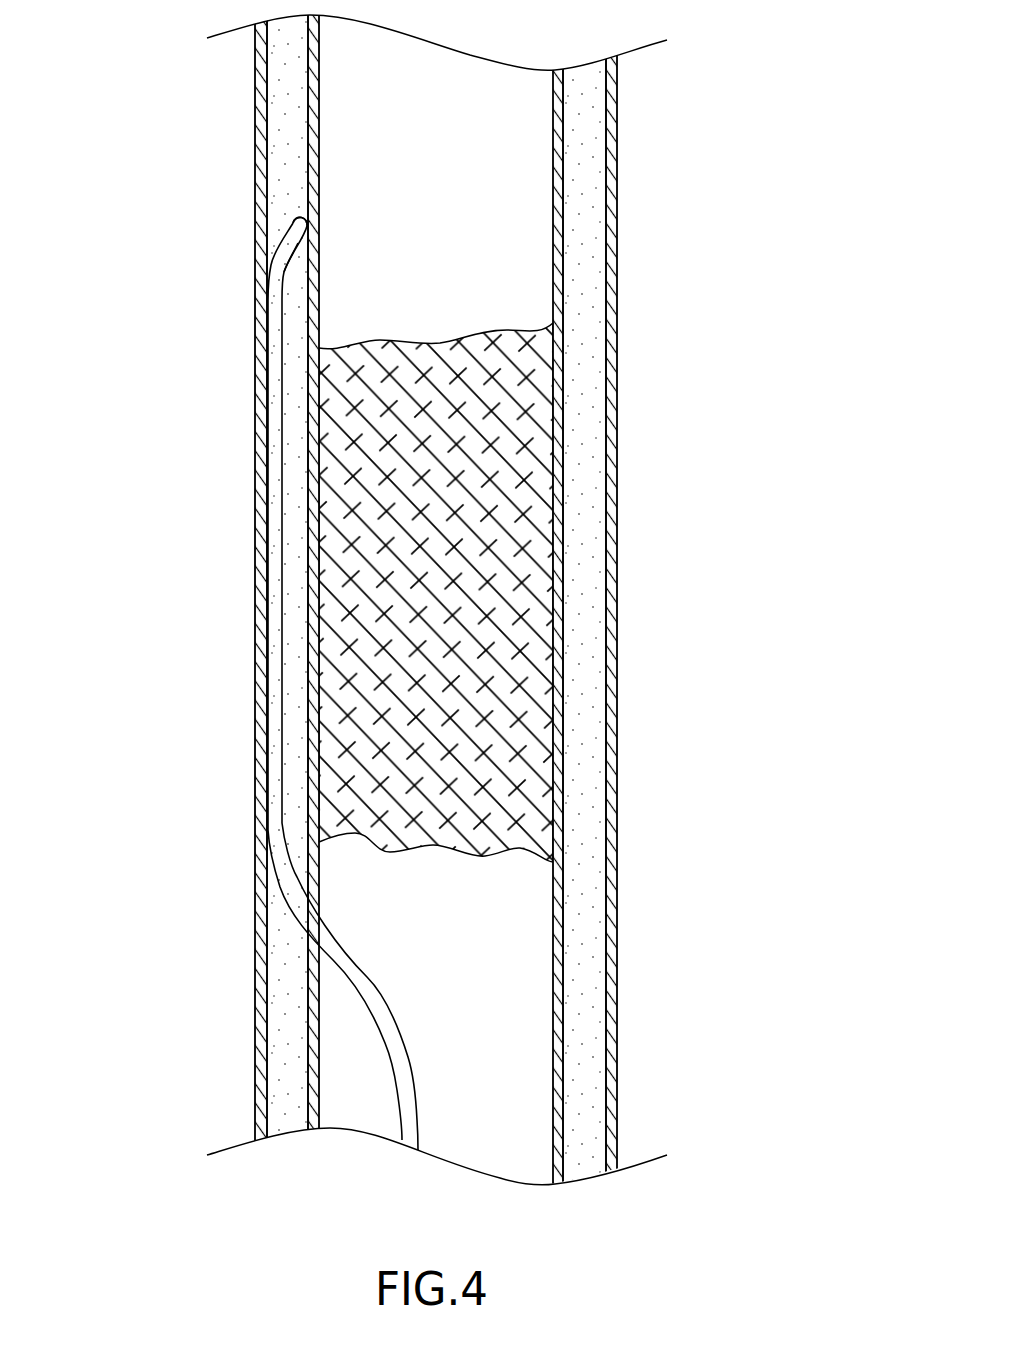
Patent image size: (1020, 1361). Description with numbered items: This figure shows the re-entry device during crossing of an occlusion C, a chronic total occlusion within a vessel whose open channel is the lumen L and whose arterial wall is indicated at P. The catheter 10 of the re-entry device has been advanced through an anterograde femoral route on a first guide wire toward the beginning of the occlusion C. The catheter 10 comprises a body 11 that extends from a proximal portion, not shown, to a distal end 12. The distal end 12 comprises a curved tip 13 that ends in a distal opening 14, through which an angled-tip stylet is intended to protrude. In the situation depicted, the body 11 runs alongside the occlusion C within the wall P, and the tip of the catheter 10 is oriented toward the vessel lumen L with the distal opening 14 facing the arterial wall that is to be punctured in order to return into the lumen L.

The vessel wall P is at (288, 115).
The lumen L is at (493, 193).
The occlusion C is at (490, 537).
The catheter 10 is at (271, 901).
The body 11 is at (270, 499).
The distal end 12 is at (278, 233).
The curved tip 13 is at (290, 268).
The distal opening 14 is at (308, 213).